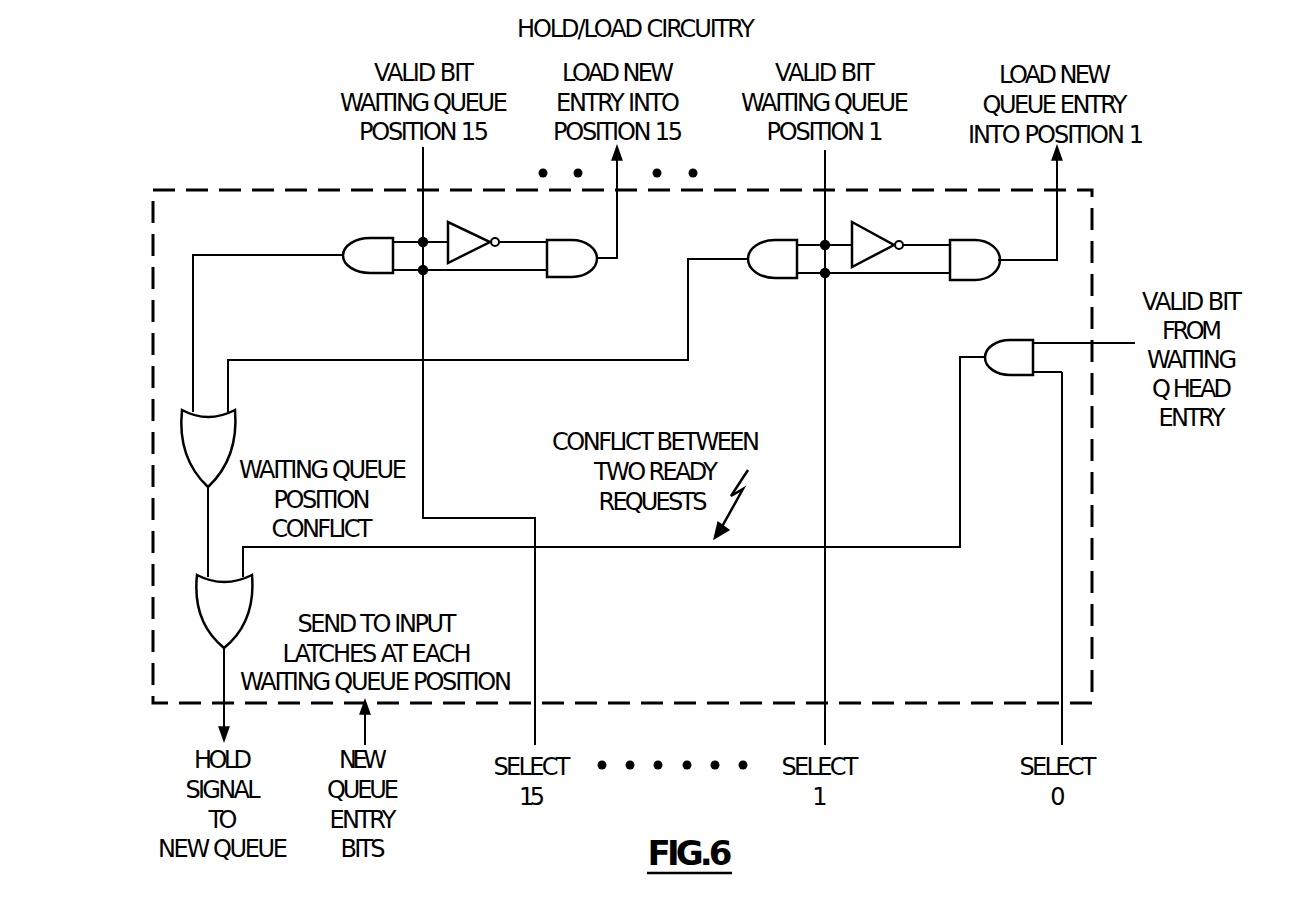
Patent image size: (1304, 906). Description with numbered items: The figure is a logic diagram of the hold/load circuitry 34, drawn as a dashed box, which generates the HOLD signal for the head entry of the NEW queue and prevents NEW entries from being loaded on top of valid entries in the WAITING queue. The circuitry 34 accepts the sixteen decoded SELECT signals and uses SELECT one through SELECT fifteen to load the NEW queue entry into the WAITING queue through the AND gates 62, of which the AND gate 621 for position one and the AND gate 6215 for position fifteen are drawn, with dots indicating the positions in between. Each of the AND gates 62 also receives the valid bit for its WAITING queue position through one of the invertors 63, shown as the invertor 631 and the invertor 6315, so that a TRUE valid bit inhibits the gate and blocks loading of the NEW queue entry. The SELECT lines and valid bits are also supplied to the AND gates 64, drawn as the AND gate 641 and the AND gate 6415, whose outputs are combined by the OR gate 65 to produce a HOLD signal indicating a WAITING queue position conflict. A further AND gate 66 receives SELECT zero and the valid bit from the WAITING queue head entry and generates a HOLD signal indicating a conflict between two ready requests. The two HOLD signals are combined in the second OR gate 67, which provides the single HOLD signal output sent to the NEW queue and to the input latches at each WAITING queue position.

The hold/load circuitry 34 is at (278, 187).
The AND gates 62 is at (742, 232).
The AND gate for position fifteen 6215 is at (553, 279).
The AND gate for position one 621 is at (958, 281).
The invertors 63 is at (686, 236).
The invertor for position fifteen 6315 is at (474, 232).
The invertor for position one 631 is at (876, 233).
The AND gates 64 is at (509, 325).
The AND gate for position fifteen 6415 is at (349, 273).
The AND gate for position one 641 is at (755, 278).
The OR gate 65 is at (236, 422).
The AND gate 66 is at (991, 372).
The second OR gate 67 is at (252, 604).